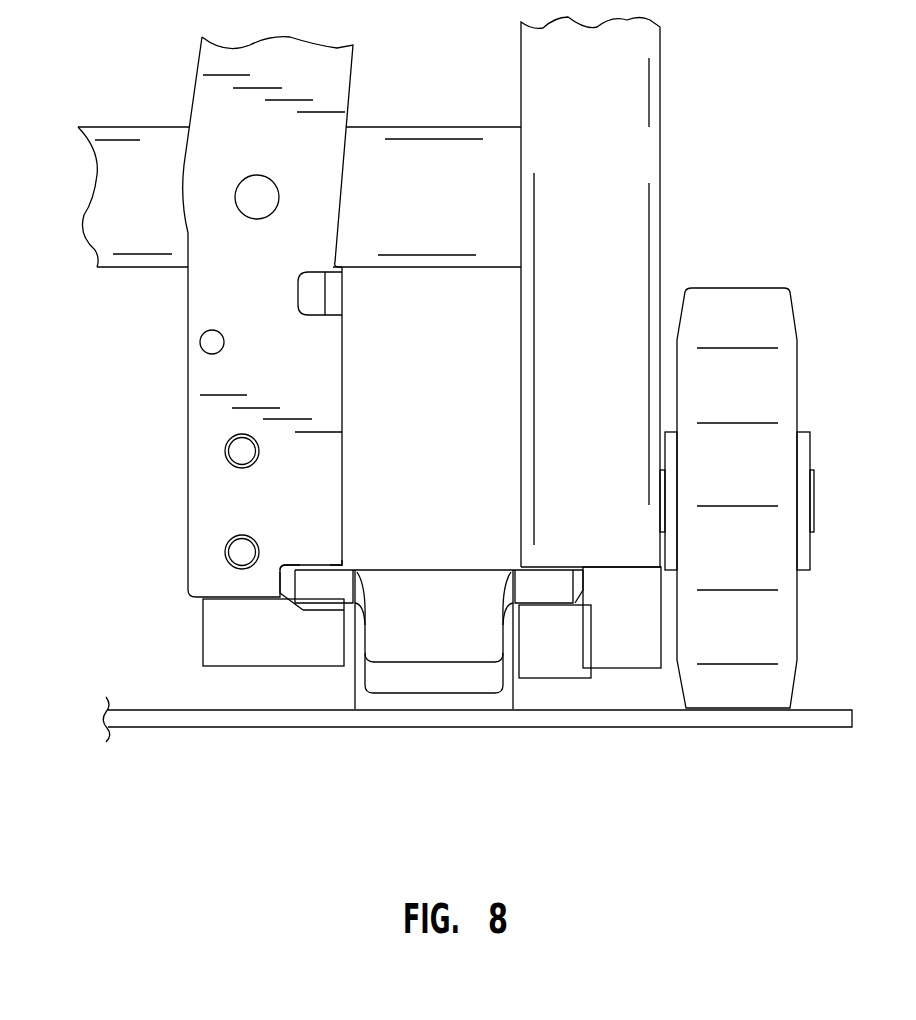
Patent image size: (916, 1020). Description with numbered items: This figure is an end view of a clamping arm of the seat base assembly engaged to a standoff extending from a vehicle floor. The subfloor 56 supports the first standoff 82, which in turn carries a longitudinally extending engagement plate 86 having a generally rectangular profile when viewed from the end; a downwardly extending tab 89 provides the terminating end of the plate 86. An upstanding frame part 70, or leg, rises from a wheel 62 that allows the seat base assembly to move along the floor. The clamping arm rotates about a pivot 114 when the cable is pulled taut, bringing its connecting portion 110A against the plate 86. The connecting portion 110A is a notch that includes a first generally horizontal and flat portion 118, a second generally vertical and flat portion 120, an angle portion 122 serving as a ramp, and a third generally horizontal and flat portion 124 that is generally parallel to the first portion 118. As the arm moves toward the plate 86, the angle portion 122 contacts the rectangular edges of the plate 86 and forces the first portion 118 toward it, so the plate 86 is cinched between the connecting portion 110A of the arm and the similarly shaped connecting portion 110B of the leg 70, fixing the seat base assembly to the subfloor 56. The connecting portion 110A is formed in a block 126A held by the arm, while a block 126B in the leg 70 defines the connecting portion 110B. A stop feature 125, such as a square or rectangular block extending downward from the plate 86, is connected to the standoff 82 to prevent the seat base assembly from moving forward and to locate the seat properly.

The subfloor 56 is at (813, 717).
The wheel 62 is at (785, 383).
The upstanding frame part 70 is at (642, 150).
The first standoff 82 is at (434, 703).
The engagement plate 86 is at (340, 583).
The downwardly extending tab 89 is at (447, 637).
The connecting portion 110A is at (280, 577).
The connecting portion 110B is at (582, 583).
The pivot 114 is at (233, 197).
The first generally horizontal and flat portion 118 is at (328, 560).
The second generally vertical and flat portion 120 is at (272, 580).
The angle portion 122 is at (289, 603).
The third generally horizontal and flat portion 124 is at (322, 612).
The stop feature 125 is at (555, 686).
The block 126A is at (215, 652).
The block 126B is at (632, 647).